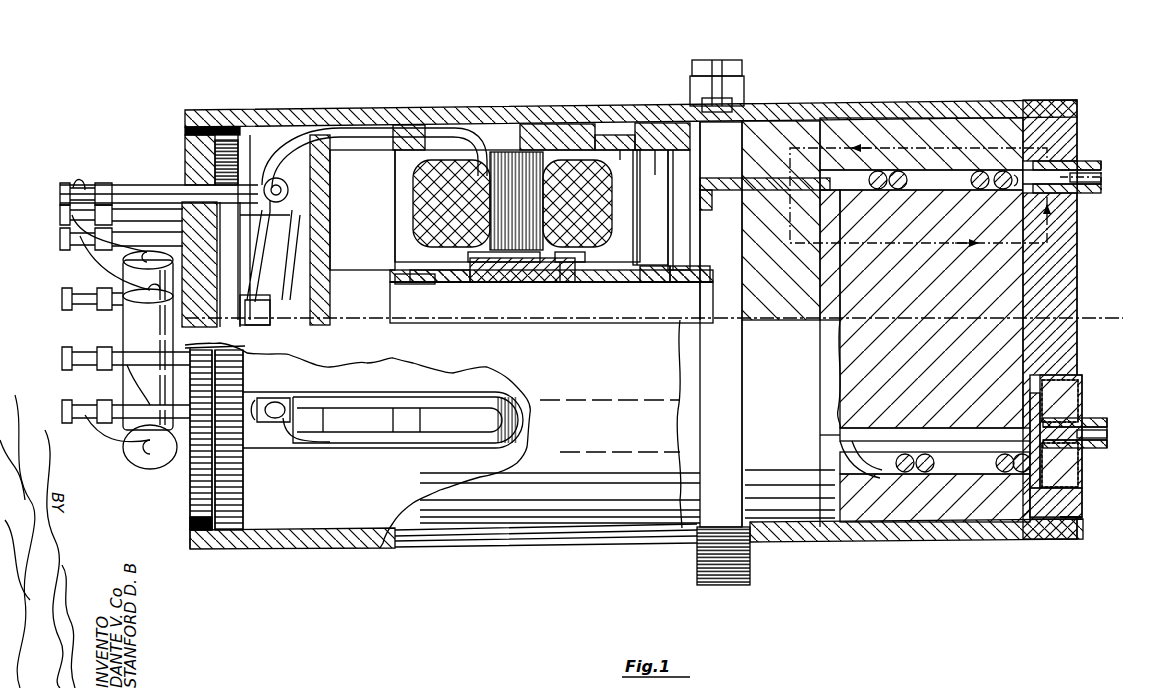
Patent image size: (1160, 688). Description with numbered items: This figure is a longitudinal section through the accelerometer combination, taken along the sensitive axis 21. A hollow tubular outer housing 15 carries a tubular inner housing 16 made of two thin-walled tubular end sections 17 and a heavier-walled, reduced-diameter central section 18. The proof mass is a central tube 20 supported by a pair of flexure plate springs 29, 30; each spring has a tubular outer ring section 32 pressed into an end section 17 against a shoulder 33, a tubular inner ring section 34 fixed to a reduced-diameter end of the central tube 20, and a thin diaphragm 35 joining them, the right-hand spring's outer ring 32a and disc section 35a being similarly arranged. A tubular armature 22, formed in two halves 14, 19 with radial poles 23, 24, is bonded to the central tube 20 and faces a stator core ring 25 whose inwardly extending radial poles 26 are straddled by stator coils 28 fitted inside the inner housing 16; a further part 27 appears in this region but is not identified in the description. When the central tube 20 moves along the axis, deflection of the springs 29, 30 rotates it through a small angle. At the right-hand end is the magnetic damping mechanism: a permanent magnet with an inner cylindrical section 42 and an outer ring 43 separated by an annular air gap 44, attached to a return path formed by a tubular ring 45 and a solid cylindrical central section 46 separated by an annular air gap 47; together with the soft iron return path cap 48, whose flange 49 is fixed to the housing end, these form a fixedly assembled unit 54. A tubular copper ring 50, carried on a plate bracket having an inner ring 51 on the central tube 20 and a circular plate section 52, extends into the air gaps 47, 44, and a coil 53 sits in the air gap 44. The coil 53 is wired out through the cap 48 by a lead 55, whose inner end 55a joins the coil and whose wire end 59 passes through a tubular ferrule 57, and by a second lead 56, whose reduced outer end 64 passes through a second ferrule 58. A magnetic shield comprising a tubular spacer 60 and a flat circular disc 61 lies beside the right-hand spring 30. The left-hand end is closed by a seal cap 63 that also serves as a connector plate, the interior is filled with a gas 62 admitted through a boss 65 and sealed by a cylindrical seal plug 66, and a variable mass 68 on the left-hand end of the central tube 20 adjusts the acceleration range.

The armature section 14 is at (455, 272).
The outer housing 15 is at (302, 545).
The inner housing 16 is at (573, 122).
The end section 17 is at (645, 128).
The central section 18 is at (548, 123).
The armature section 19 is at (570, 270).
The central tube 20 is at (565, 284).
The sensitive axis 21 is at (1105, 320).
The tubular armature 22 is at (523, 270).
The armature pole 23 is at (470, 262).
The armature pole 24 is at (553, 282).
The stator core ring 25 is at (510, 168).
The stator pole 26 is at (475, 270).
The washer 27 is at (565, 262).
The stator coil 28 is at (395, 179).
The flexure plate spring 29 is at (393, 192).
The flexure plate spring 30 is at (640, 215).
The outer ring section 32 is at (404, 148).
The outer ring section 32a is at (625, 148).
The shoulder 33 is at (595, 133).
The inner ring section 34 is at (430, 284).
The diaphragm 35 is at (382, 262).
The disc section 35a is at (635, 262).
The inner permanent magnet section 42 is at (1020, 271).
The outer permanent magnet ring 43 is at (1033, 106).
The annular air gap 44 is at (957, 170).
The tubular ring 45 is at (795, 121).
The central return path section 46 is at (748, 316).
The annular air gap 47 is at (790, 232).
The end cap 48 is at (1078, 238).
The flange 49 is at (1082, 522).
The copper ring 50 is at (762, 176).
The inner ring 51 is at (688, 283).
The circular plate section 52 is at (700, 268).
The coil 53 is at (920, 472).
The fixedly assembled unit 54 is at (1012, 298).
The lead 55 is at (905, 433).
The inner lead end 55a is at (852, 458).
The second lead 56 is at (1010, 192).
The tubular ferrule 57 is at (1093, 450).
The second tubular ferrule 58 is at (1082, 164).
The lead wire end 59 is at (1093, 430).
The outer ring spacer 60 is at (660, 140).
The circular disc 61 is at (672, 166).
The gas 62 is at (325, 491).
The seal cap 63 is at (193, 489).
The outer end 64 is at (1106, 180).
The boss 65 is at (745, 86).
The seal plug 66 is at (740, 63).
The variable mass 68 is at (378, 312).